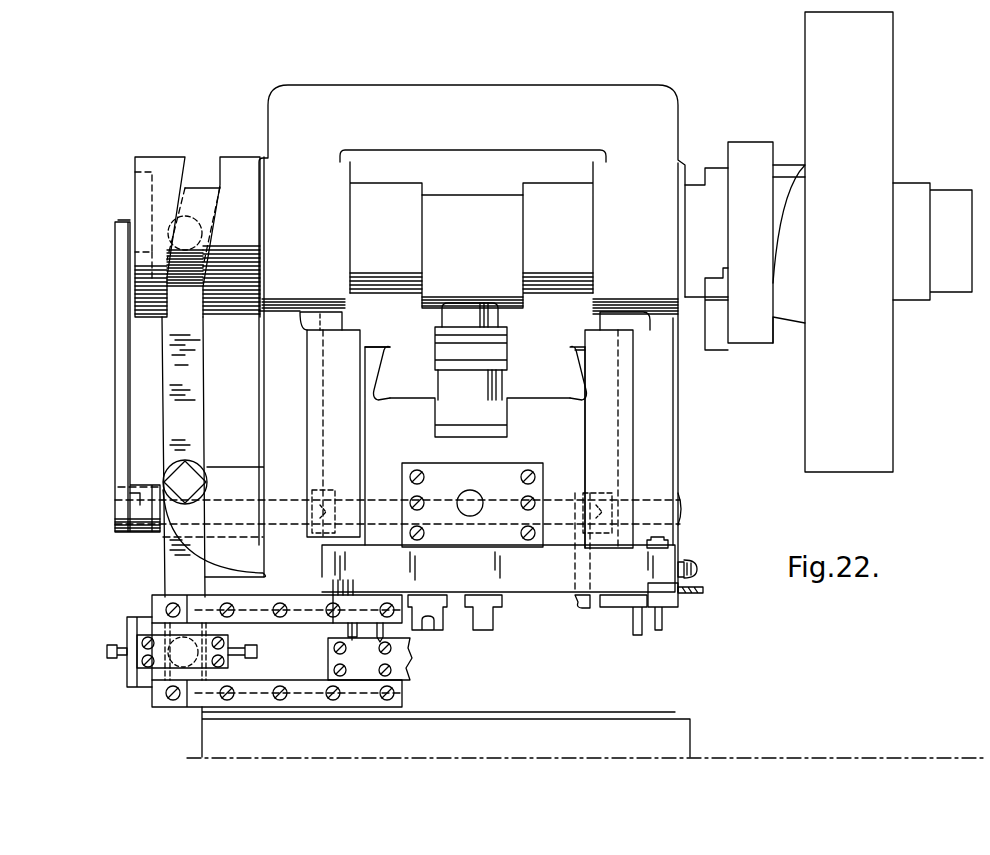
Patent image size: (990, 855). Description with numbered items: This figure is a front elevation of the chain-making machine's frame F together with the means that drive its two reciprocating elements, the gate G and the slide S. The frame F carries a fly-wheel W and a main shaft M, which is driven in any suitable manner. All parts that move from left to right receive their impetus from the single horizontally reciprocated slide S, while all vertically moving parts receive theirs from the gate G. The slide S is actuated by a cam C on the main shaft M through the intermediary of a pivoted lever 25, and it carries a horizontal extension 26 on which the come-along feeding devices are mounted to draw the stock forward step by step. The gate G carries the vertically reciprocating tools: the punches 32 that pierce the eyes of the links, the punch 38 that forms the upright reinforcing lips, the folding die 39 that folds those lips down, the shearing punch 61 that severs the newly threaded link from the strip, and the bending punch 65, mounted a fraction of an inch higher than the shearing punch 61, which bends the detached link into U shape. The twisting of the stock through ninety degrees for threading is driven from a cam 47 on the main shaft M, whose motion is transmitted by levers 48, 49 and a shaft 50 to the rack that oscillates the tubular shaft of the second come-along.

The pivoted lever 25 is at (195, 390).
The horizontal extension 26 is at (412, 670).
The punches 32 is at (352, 627).
The punch 38 is at (440, 624).
The folding die 39 is at (497, 620).
The cam 47 is at (135, 188).
The lever 48 is at (117, 376).
The lever 49 is at (575, 603).
The shaft 50 is at (278, 508).
The shearing punch 61 is at (635, 620).
The bending punch 65 is at (670, 621).
The cam C is at (220, 170).
The frame F is at (472, 338).
The main shaft M is at (471, 281).
The gate G is at (586, 552).
The slide S is at (150, 618).
The fly-wheel W is at (828, 242).